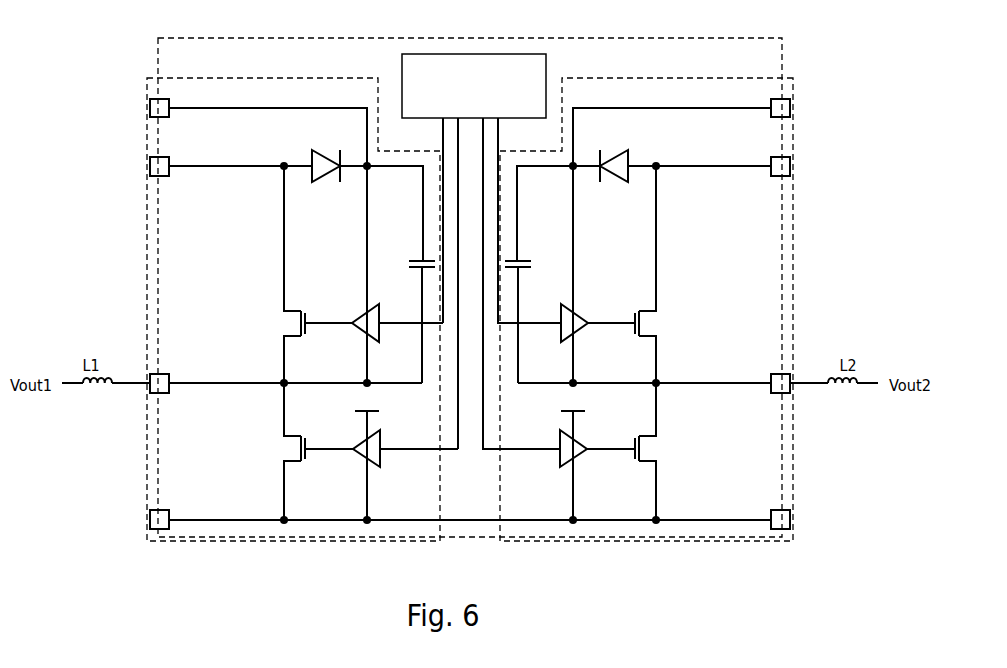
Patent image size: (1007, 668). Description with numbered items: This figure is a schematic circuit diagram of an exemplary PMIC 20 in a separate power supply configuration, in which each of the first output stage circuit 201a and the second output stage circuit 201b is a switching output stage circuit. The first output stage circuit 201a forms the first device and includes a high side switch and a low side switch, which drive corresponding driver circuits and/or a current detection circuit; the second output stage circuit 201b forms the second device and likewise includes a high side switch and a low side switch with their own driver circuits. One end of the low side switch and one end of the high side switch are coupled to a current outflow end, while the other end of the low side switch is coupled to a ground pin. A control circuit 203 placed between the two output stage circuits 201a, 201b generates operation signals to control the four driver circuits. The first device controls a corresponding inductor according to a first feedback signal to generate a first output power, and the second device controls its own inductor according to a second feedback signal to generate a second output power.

The PMIC 20 is at (412, 36).
The first output stage circuit 201a is at (285, 78).
The second output stage circuit 201b is at (700, 77).
The control circuit 203 is at (490, 110).